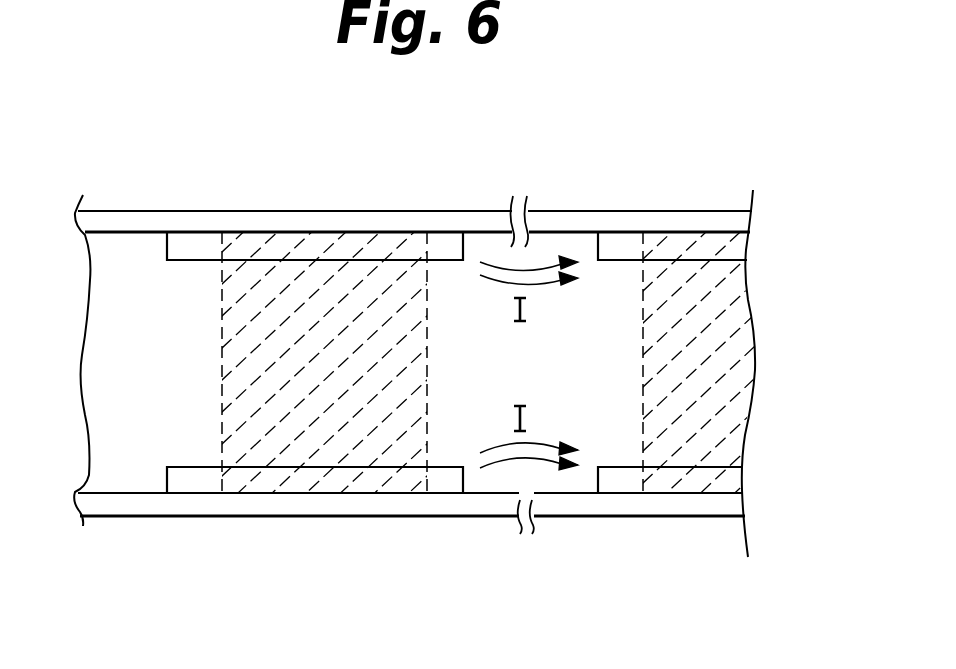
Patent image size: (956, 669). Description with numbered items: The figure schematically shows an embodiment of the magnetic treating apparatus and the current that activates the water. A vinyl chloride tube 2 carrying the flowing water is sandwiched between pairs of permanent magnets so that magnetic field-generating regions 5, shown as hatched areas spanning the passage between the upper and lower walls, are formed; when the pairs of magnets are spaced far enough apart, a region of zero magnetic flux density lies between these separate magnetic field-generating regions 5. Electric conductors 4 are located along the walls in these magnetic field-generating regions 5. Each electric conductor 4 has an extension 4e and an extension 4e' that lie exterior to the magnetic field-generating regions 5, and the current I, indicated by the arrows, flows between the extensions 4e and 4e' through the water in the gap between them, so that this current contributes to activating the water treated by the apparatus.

The substrate / cell 2 is at (296, 517).
The electric conductor 4 is at (259, 239).
The extension 4e is at (318, 367).
The extension 4e' is at (672, 367).
The magnetic field-generating region 5 is at (218, 353).